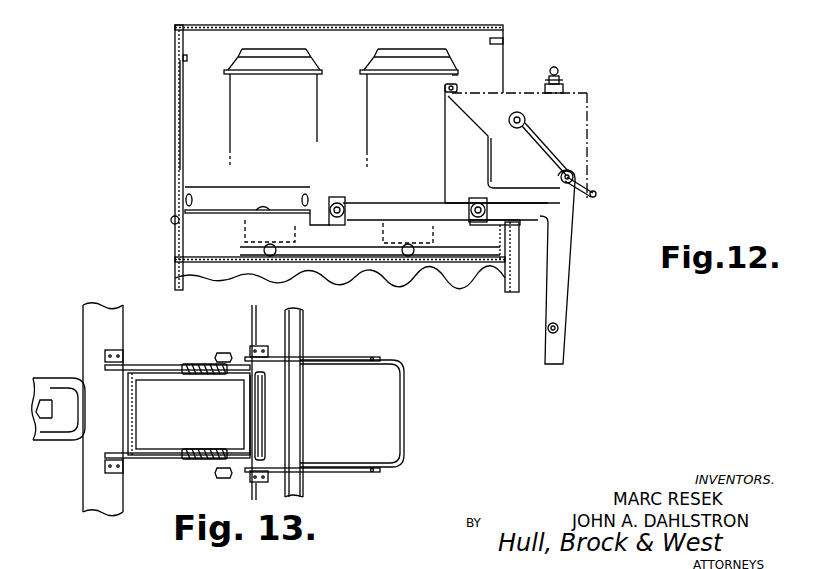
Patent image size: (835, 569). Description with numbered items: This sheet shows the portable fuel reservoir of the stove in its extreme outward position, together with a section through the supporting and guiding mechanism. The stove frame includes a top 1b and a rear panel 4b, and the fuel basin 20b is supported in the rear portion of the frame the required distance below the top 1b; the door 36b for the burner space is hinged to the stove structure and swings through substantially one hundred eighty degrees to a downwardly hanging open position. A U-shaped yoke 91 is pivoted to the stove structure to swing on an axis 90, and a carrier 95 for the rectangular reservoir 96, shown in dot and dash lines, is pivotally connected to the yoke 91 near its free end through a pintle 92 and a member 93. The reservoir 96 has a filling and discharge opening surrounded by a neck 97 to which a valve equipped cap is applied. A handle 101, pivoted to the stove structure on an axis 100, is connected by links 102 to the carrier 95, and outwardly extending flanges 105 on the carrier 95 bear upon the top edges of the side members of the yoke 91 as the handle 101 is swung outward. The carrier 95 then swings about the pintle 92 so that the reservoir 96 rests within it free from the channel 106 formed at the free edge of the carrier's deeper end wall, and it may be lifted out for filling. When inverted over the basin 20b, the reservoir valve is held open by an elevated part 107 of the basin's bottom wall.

In FIG. 12, the top 1b is at (507, 38).
In FIG. 12, the rear panel 4b is at (176, 44).
In FIG. 12, the fuel basin 20b is at (213, 212).
In FIG. 13, the fuel basin 20b is at (62, 396).
In FIG. 13, the door 36b is at (305, 333).
In FIG. 13, the axis 90 is at (121, 356).
In FIG. 12, the yoke 91 is at (382, 206).
In FIG. 13, the yoke 91 is at (162, 365).
In FIG. 13, the pintle 92 is at (263, 395).
In FIG. 13, the member 93 is at (251, 432).
In FIG. 12, the carrier 95 is at (503, 142).
In FIG. 13, the carrier 95 is at (189, 414).
In FIG. 12, the reservoir 96 is at (573, 136).
In FIG. 12, the neck 97 is at (562, 80).
In FIG. 13, the axis 100 is at (262, 346).
In FIG. 12, the handle 101 is at (562, 350).
In FIG. 13, the handle 101 is at (405, 421).
In FIG. 13, the links 102 is at (325, 357).
In FIG. 13, the flanges 105 is at (192, 363).
In FIG. 12, the channel 106 is at (458, 76).
In FIG. 13, the elevated part 107 is at (44, 420).